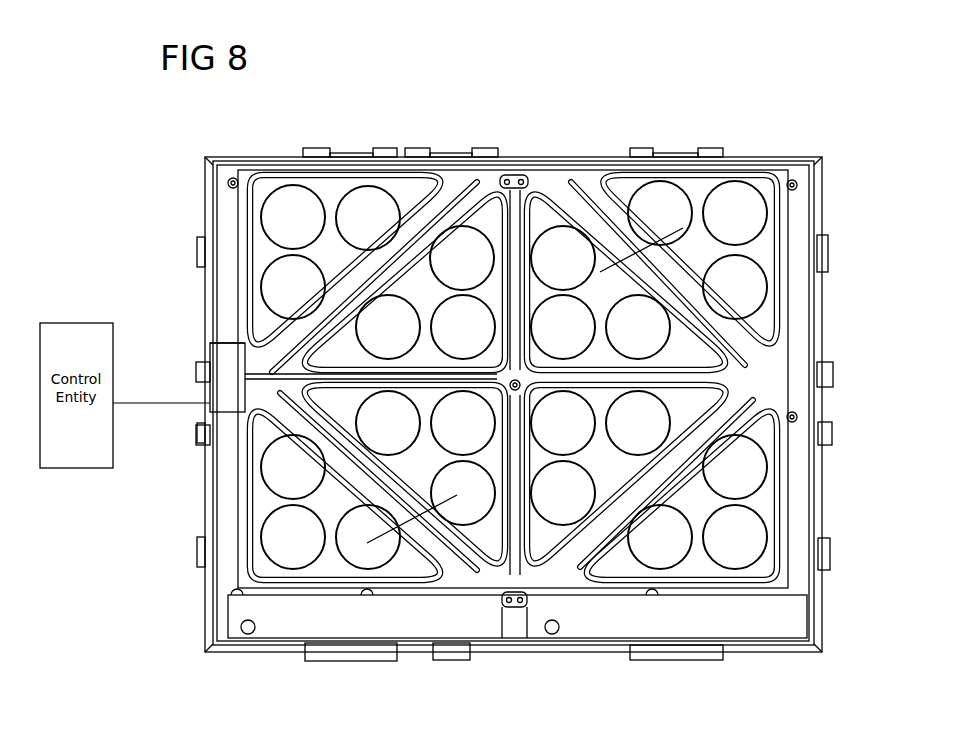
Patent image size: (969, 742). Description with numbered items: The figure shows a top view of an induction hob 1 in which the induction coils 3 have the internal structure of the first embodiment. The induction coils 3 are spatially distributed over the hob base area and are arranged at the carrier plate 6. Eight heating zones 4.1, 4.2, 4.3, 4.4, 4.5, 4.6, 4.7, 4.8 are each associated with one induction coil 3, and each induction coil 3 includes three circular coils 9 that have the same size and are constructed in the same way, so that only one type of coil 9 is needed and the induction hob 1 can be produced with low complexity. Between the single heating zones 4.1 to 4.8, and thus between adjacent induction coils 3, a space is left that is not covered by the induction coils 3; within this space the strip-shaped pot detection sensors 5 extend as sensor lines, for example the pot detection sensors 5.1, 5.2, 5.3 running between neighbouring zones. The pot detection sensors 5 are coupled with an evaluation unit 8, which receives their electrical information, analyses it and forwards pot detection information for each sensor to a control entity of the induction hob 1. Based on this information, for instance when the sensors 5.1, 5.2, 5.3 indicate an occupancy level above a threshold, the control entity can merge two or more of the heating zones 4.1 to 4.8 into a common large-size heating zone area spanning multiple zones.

The induction hob 1 is at (852, 151).
The induction coil 3 is at (738, 192).
The heating zone 4.1 is at (268, 185).
The heating zone 4.2 is at (488, 204).
The heating zone 4.3 is at (305, 588).
The heating zone 4.4 is at (493, 593).
The heating zone 4.5 is at (762, 317).
The heating zone 4.6 is at (697, 355).
The heating zone 4.7 is at (780, 425).
The heating zone 4.8 is at (758, 498).
The pot detection sensor 5 is at (300, 378).
The pot detection sensor 5.1 is at (462, 157).
The pot detection sensor 5.2 is at (208, 350).
The pot detection sensor 5.3 is at (445, 590).
The carrier plate 6 is at (572, 180).
The evaluation unit 8 is at (225, 385).
The coil 9 is at (368, 215).